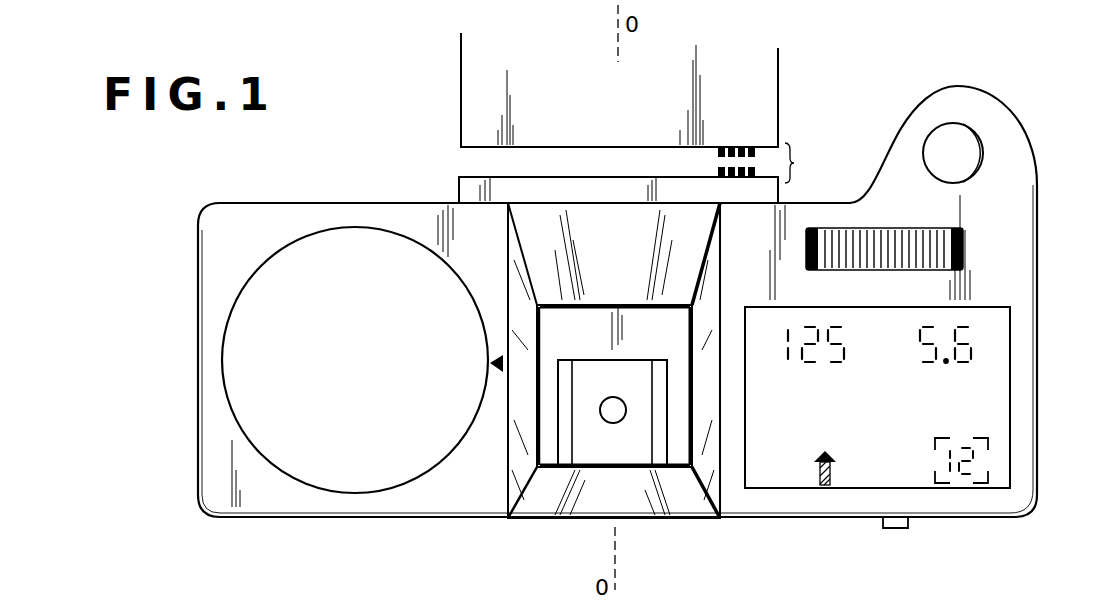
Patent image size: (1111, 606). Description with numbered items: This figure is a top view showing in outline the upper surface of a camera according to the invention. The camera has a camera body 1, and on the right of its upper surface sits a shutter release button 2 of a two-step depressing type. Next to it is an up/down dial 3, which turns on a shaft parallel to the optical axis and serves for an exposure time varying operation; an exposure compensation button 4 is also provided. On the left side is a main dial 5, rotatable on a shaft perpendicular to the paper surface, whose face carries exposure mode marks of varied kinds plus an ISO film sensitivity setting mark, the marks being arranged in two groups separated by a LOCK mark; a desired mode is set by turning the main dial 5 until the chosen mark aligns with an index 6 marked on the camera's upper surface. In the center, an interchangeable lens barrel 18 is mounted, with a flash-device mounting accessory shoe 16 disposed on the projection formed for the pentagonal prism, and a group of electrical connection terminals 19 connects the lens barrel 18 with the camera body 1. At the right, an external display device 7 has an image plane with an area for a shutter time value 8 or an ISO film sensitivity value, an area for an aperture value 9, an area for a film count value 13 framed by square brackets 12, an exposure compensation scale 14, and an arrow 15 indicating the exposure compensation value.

The camera body 1 is at (262, 203).
The shutter release button 2 is at (960, 143).
The up/down dial 3 is at (935, 248).
The exposure compensation button 4 is at (897, 530).
The main dial 5 is at (303, 465).
The index 6 is at (496, 376).
The external display device 7 is at (995, 320).
The shutter time value 8 is at (848, 333).
The aperture value 9 is at (978, 340).
The square brackets 12 is at (975, 440).
The film count value 13 is at (975, 463).
The exposure compensation scale 14 is at (775, 452).
The arrow 15 is at (821, 486).
The flash-device mounting accessory shoe 16 is at (642, 452).
The interchangeable lens barrel 18 is at (478, 78).
The electrical connection terminals 19 is at (797, 163).